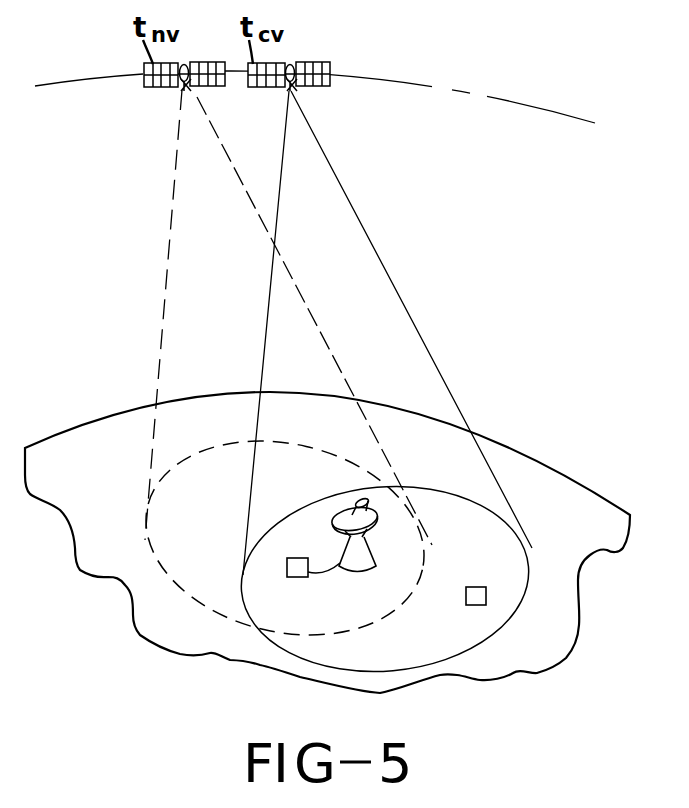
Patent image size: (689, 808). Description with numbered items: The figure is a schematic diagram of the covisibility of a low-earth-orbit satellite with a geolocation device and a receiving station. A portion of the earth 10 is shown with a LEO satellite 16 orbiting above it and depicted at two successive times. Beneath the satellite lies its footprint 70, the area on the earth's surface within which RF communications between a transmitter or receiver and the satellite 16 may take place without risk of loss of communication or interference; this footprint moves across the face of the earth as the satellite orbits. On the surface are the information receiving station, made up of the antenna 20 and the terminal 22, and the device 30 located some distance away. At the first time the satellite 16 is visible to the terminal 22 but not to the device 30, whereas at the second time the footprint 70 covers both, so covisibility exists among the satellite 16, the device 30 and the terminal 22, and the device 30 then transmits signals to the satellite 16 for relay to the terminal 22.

The earth 10 is at (480, 431).
The LEO satellite 16 is at (180, 86).
The antenna 20 is at (363, 501).
The terminal 22 is at (288, 576).
The device 30 is at (487, 602).
The footprint 70 is at (137, 608).